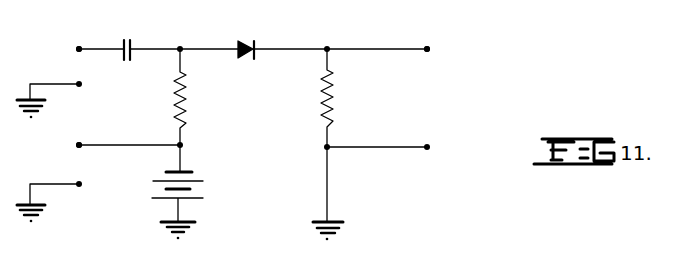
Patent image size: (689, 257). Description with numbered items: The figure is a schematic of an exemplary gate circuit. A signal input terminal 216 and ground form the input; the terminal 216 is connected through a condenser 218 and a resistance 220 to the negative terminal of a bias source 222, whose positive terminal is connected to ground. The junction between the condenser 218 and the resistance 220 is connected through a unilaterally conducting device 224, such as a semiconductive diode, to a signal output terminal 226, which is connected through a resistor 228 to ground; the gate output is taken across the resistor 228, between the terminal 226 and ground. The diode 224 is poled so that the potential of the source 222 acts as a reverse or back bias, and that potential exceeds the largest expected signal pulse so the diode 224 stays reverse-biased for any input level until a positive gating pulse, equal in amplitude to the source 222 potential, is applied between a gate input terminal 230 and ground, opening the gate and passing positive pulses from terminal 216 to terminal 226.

The signal input terminal 216 is at (79, 47).
The condenser 218 is at (128, 40).
The resistance 220 is at (185, 80).
The bias source 222 is at (196, 177).
The unilaterally conducting device 224 is at (248, 42).
The signal output terminal 226 is at (426, 47).
The resistor 228 is at (334, 82).
The gate input terminal 230 is at (79, 143).